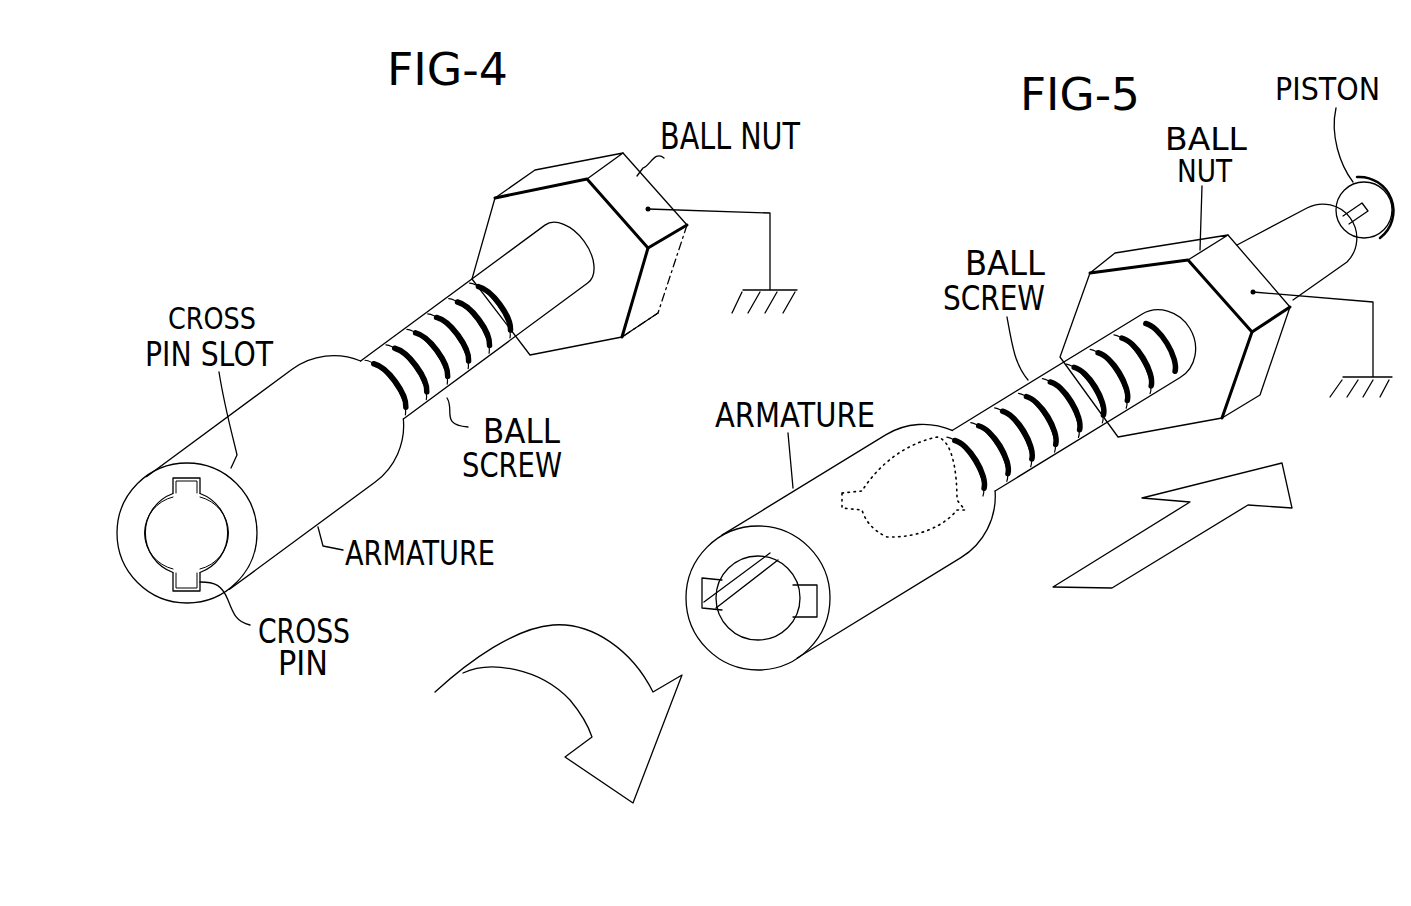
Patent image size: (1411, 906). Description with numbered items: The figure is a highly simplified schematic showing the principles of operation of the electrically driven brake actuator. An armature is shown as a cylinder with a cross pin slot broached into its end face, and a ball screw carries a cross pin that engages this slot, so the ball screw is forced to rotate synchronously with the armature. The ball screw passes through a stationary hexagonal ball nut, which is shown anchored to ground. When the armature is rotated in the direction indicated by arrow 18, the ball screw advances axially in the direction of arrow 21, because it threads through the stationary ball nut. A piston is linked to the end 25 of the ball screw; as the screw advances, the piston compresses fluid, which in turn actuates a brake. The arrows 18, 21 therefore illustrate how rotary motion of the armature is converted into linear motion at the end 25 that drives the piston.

In FIG. 4, the arrow 18 is at (647, 773).
In FIG. 5, the arrow 21 is at (1150, 565).
In FIG. 5, the end of the ball screw 25 is at (1350, 250).